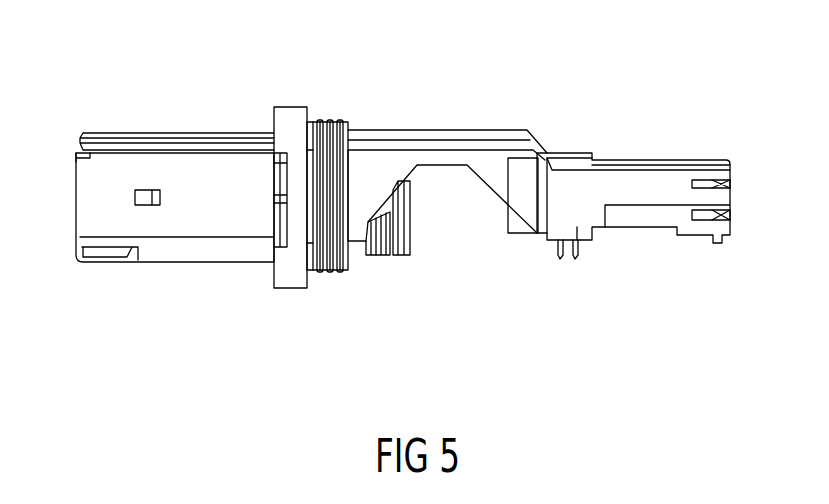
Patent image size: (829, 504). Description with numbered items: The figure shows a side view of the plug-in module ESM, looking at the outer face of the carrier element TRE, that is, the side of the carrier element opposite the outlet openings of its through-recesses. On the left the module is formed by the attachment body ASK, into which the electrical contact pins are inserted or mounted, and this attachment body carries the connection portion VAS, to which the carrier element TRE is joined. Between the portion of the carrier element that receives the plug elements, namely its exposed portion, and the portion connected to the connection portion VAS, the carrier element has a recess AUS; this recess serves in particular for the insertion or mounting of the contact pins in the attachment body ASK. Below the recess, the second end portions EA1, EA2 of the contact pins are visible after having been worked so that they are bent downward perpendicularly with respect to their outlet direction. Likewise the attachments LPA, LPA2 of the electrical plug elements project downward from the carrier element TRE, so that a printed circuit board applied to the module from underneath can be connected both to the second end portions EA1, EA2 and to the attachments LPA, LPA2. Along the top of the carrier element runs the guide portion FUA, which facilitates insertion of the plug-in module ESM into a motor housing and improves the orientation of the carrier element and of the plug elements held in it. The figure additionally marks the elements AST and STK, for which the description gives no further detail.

The plug-in module ESM is at (599, 79).
The attachment body ASK is at (268, 313).
The connector housing AST is at (173, 130).
The connection portion VAS is at (293, 106).
The guide portion FUA is at (427, 130).
The recess AUS is at (470, 197).
The second end portion of electrical contact pin EA1 is at (383, 257).
The second end portion of electrical contact pin EA2 is at (403, 257).
The carrier element TRE is at (695, 160).
The attachment of electrical plug element LPA is at (560, 260).
The attachment of electrical plug element LPA2 is at (577, 260).
The contact carrier STK is at (520, 376).